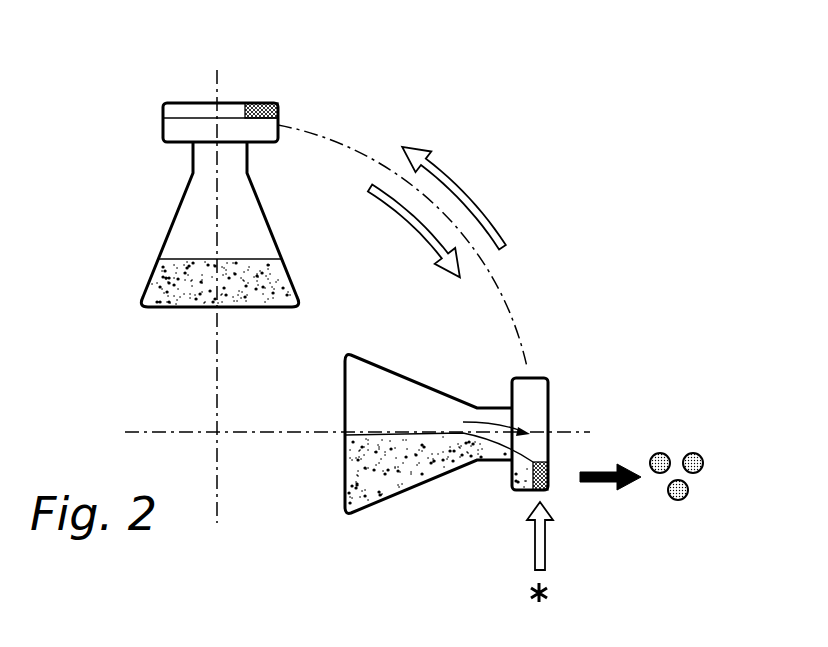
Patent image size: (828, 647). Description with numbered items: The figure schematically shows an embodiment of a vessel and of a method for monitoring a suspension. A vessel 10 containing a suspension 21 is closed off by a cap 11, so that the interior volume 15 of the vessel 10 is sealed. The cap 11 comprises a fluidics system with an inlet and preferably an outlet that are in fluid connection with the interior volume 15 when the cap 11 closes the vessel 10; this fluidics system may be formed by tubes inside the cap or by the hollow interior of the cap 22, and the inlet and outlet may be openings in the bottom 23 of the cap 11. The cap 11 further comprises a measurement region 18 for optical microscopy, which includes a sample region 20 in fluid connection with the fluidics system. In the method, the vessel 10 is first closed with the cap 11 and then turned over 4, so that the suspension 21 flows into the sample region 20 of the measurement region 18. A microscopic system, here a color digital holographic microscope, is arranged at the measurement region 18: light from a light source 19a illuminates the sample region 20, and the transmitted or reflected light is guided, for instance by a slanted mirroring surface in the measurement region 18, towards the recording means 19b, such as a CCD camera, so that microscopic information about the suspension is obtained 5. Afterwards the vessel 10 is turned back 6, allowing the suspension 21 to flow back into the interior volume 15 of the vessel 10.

The vessel 10 is at (155, 210).
The cap 11 is at (172, 103).
The hollow interior of the cap 22 is at (183, 125).
The bottom of the cap 23 is at (207, 140).
The sample region 20 is at (260, 102).
The suspension 21 is at (158, 280).
The interior volume 15 is at (203, 233).
The measurement region 18 is at (286, 99).
The turning back 6 is at (464, 196).
The turning over 4 is at (412, 226).
The obtaining microscopic information 5 is at (595, 484).
The light source 19a is at (509, 592).
The recording means 19b is at (680, 510).